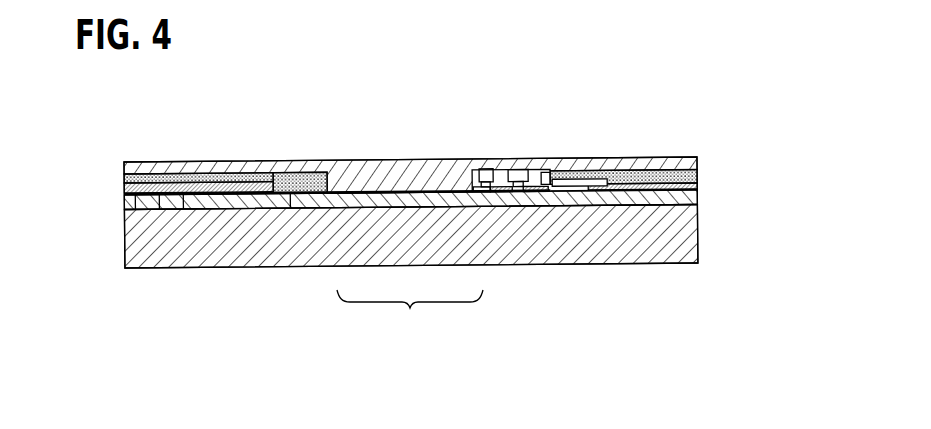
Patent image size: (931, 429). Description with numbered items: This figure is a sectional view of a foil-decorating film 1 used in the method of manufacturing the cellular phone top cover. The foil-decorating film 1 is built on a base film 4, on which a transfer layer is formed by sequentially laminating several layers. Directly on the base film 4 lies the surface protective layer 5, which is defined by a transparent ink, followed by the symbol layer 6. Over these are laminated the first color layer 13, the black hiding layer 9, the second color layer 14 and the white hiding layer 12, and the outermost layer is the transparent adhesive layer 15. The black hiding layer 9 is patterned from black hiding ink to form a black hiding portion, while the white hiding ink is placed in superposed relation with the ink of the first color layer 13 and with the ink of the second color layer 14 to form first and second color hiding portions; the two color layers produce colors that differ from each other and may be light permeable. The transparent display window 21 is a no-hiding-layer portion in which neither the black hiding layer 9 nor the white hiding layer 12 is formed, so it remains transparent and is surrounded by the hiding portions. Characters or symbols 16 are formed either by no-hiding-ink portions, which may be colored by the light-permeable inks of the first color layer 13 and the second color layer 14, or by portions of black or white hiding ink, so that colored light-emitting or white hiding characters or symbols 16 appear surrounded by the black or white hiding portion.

The foil-decorating film 1 is at (173, 138).
The base film 4 is at (698, 231).
The surface protective layer 5 is at (127, 205).
The symbol layer 6 is at (135, 201).
The black hiding layer 9 is at (271, 188).
The white hiding layer 12 is at (124, 178).
The first color layer 13 is at (698, 188).
The second color layer 14 is at (124, 188).
The transparent adhesive layer 15 is at (572, 175).
The characters or symbols 16 is at (289, 201).
The transparent display window 21 is at (410, 314).